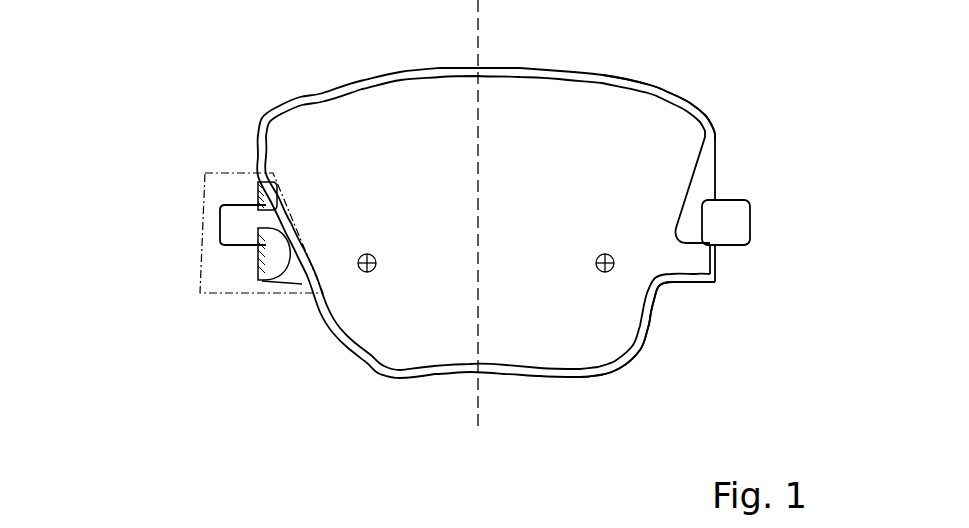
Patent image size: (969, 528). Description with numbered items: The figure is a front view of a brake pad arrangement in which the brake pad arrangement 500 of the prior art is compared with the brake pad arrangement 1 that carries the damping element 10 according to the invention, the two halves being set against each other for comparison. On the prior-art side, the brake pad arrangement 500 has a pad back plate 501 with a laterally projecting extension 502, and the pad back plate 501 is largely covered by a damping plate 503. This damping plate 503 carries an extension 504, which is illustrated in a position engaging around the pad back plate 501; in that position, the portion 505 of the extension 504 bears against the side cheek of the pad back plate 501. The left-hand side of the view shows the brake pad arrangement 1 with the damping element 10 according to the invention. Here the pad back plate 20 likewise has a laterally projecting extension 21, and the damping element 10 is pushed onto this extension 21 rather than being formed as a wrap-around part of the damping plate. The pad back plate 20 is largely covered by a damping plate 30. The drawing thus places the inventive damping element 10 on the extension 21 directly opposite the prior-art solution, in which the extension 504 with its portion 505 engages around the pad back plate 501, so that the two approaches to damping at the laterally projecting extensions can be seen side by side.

The brake pad arrangement 1 is at (232, 338).
The damping element 10 is at (230, 183).
The pad back plate 20 is at (322, 95).
The laterally projecting extension 21 is at (233, 225).
The damping plate 30 is at (417, 120).
The brake pad arrangement 500 is at (730, 120).
The pad back plate 501 is at (652, 93).
The laterally projecting extension 502 is at (747, 202).
The damping plate 503 is at (595, 293).
The extension 504 is at (685, 258).
The portion 505 is at (713, 262).